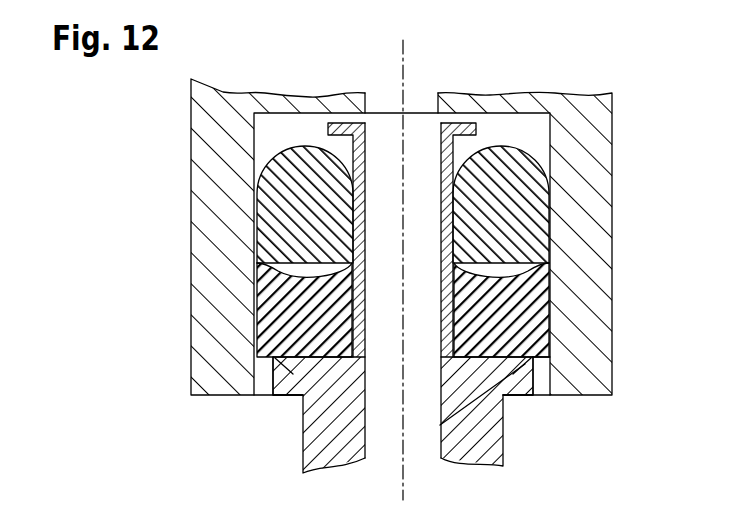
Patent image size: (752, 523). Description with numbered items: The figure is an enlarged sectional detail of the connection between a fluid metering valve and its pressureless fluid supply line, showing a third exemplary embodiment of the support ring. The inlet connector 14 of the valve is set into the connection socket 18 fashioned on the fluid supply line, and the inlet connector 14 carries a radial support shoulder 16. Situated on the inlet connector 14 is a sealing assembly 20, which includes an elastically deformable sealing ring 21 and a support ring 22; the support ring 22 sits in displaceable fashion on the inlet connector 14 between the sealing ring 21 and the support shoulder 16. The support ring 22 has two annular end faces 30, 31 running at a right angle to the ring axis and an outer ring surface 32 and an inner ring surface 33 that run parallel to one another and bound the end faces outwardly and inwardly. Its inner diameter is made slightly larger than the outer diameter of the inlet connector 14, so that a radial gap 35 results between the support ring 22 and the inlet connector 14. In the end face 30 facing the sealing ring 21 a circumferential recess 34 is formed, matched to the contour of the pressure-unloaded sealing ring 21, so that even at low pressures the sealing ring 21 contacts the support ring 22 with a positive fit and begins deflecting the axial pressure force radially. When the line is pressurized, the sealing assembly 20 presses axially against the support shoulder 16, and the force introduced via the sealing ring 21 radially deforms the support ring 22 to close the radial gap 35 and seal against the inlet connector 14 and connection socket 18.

The inlet connector 14 is at (320, 440).
The support shoulder 16 is at (280, 393).
The connection socket 18 is at (598, 141).
The sealing assembly 20 is at (247, 280).
The sealing ring 21 is at (262, 193).
The support ring 22 is at (257, 320).
The annular end face 30 is at (541, 258).
The annular end face 31 is at (523, 367).
The outer ring surface 32 is at (552, 278).
The inner ring surface 33 is at (443, 360).
The circumferential recess 34 is at (297, 274).
The radial gap 35 is at (365, 327).